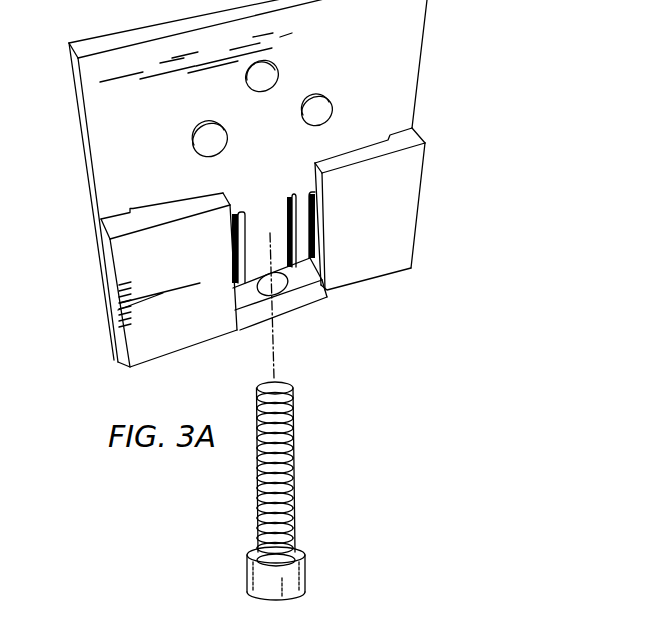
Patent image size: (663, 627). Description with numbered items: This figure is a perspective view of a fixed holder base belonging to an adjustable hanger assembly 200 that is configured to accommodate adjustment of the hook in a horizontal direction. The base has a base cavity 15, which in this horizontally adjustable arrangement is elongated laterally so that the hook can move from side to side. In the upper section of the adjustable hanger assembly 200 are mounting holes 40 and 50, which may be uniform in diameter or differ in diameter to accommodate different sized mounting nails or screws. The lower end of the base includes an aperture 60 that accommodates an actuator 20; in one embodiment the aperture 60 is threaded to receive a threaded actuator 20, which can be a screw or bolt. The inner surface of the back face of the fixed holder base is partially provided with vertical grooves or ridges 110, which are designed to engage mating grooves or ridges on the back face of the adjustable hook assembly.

The adjustable hanger assembly 200 is at (478, 76).
The base cavity 15 is at (163, 213).
The mounting hole 40 is at (279, 76).
The mounting holes 50 is at (212, 145).
The vertical grooves or ridges 110 is at (292, 228).
The aperture 60 is at (285, 277).
The actuator 20 is at (295, 491).